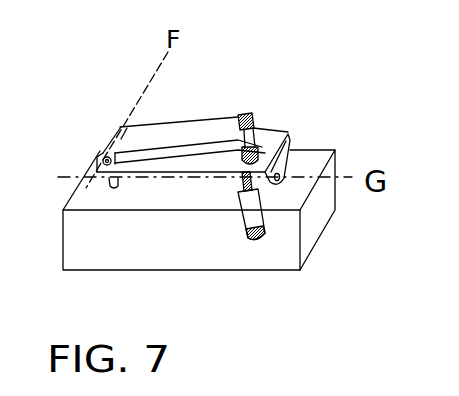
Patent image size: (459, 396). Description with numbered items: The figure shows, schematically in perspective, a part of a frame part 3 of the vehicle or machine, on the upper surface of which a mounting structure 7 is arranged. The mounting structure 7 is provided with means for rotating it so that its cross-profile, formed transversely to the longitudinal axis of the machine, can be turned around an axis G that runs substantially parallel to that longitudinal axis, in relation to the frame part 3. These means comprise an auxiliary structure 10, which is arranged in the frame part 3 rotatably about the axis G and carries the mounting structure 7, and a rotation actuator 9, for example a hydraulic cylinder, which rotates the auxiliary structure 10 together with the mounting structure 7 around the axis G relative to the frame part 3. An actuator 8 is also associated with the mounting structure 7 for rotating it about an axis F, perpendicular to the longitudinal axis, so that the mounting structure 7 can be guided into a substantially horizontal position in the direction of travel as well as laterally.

The frame part 3 is at (300, 163).
The mounting structure 7 is at (188, 137).
The actuator 8 is at (260, 148).
The rotation actuator 9 is at (255, 230).
The auxiliary structure 10 is at (272, 137).